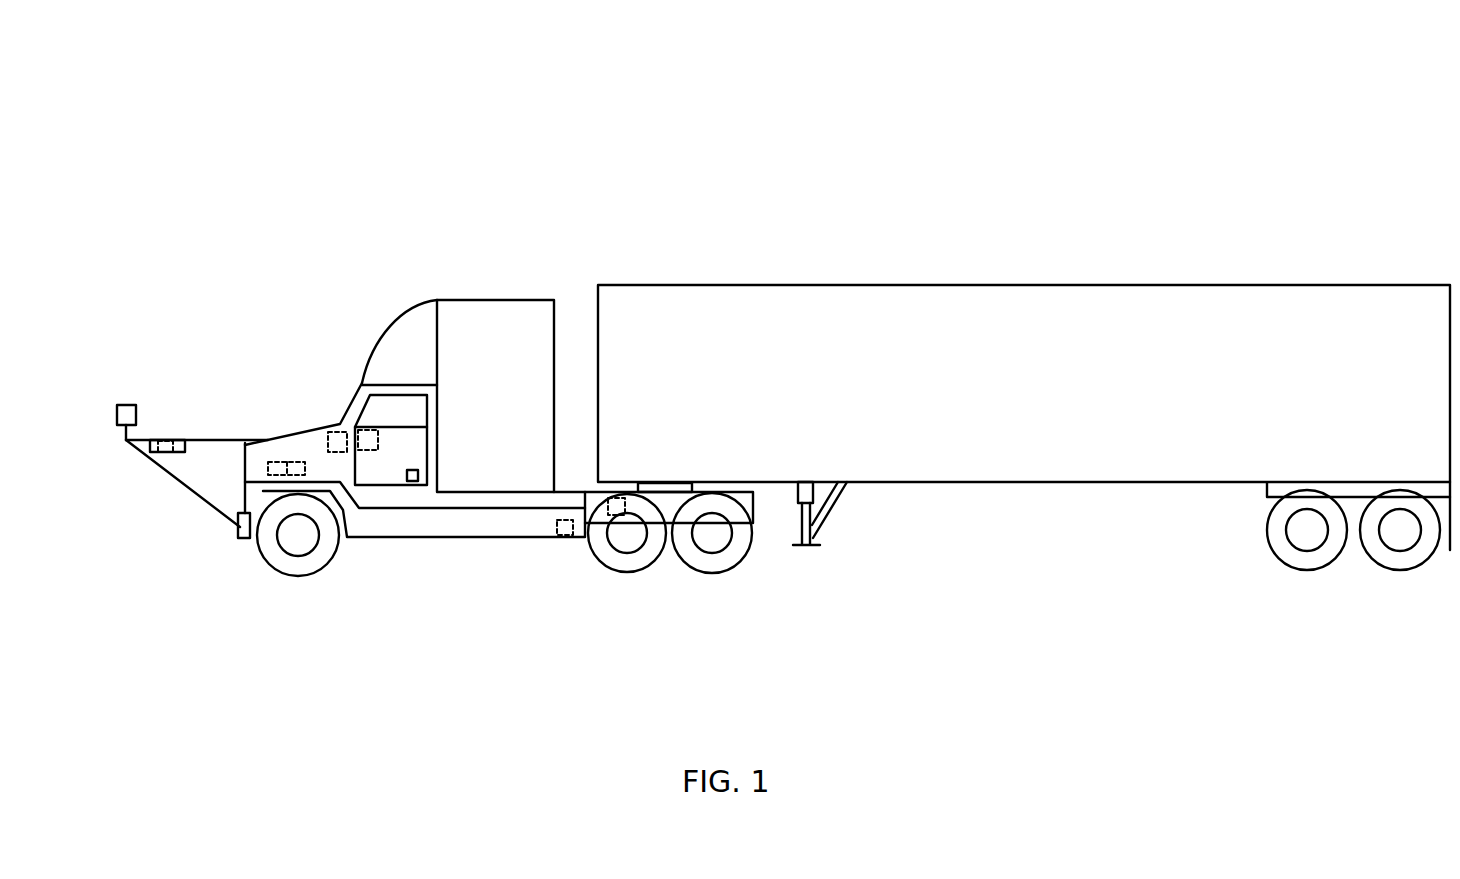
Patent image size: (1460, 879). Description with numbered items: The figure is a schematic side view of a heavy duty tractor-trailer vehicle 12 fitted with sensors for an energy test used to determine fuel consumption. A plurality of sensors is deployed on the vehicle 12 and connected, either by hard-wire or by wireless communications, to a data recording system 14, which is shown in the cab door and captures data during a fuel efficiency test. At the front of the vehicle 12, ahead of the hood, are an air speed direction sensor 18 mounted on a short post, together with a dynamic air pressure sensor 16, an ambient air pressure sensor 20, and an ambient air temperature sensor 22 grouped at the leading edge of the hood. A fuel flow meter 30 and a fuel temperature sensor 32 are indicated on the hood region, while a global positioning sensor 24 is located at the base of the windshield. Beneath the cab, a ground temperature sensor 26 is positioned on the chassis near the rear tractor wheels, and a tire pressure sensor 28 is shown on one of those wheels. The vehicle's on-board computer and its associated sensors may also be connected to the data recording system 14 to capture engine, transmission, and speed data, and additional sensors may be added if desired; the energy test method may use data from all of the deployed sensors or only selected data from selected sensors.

The vehicle 12 is at (1157, 121).
The data recording system 14 is at (368, 447).
The dynamic air pressure sensor 16 is at (161, 453).
The air speed direction sensor 18 is at (118, 404).
The ambient air pressure sensor 20 is at (168, 440).
The ambient air temperature sensor 22 is at (173, 452).
The global positioning sensor 24 is at (338, 428).
The ground temperature sensor 26 is at (566, 537).
The tire pressure sensor 28 is at (615, 514).
The fuel flow meter 30 is at (270, 467).
The fuel temperature sensor 32 is at (293, 460).